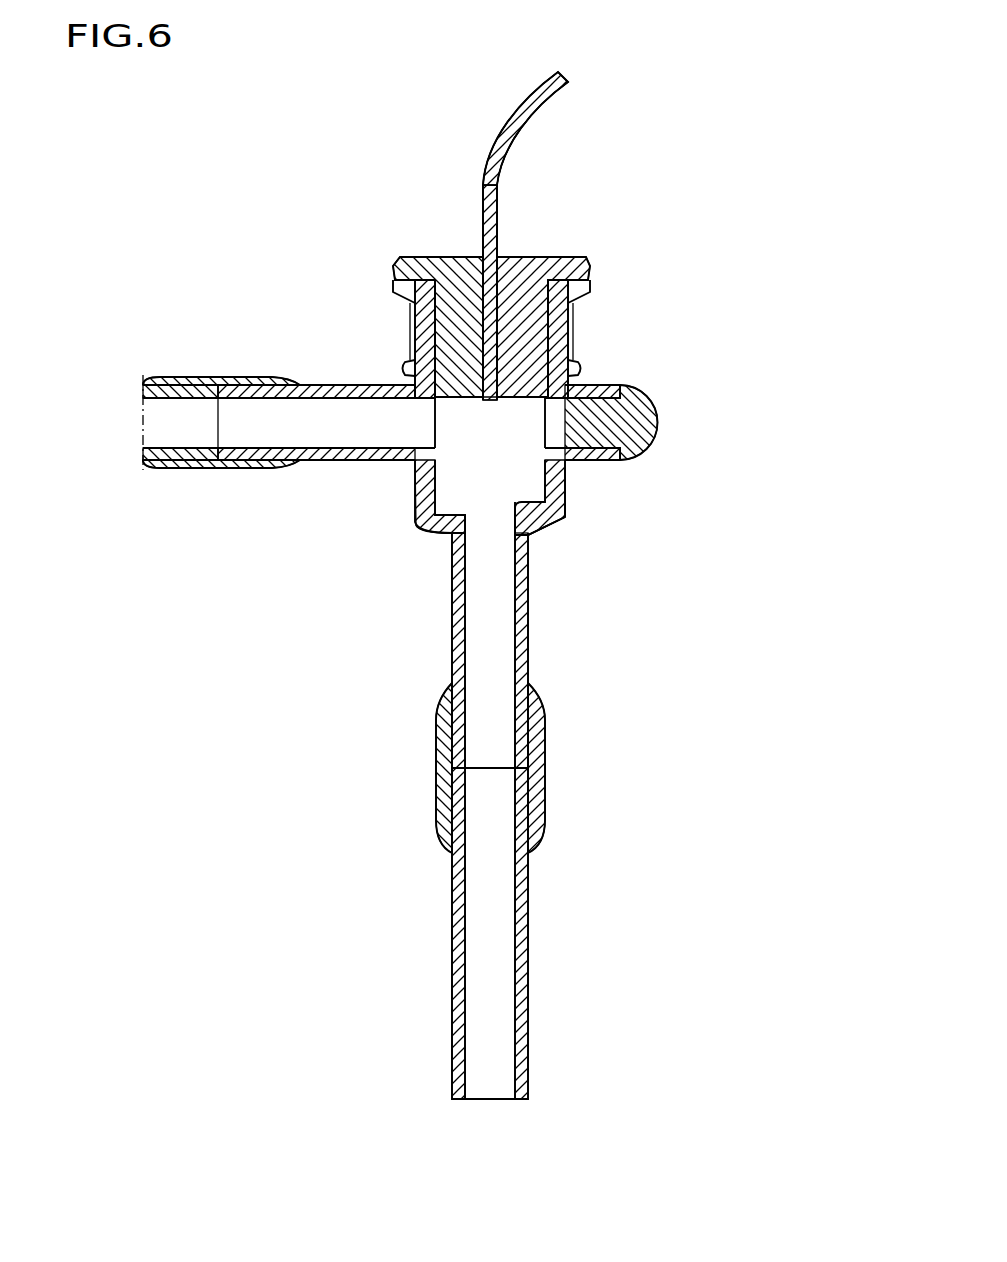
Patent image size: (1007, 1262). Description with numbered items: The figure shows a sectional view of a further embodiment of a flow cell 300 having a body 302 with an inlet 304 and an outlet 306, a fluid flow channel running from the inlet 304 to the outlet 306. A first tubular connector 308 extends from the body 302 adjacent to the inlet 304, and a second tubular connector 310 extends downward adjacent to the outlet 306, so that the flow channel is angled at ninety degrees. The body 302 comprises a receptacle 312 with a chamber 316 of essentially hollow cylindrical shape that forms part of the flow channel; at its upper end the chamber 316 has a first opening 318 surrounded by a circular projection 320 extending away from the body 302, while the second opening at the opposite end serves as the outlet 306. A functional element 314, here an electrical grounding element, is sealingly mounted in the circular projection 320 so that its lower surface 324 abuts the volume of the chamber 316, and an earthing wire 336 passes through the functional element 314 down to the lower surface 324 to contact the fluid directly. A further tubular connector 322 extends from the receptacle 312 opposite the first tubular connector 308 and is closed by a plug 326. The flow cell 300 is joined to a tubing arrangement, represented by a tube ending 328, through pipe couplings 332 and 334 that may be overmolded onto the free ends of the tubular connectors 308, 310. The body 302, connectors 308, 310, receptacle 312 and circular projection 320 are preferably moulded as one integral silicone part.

The flow cell 300 is at (422, 565).
The body 302 is at (499, 573).
The inlet 304 is at (452, 455).
The outlet 306 is at (538, 503).
The first tubular connector 308 is at (327, 380).
The second tubular connector 310 is at (532, 627).
The receptacle 312 is at (565, 483).
The functional element 314 is at (533, 251).
The chamber 316 is at (440, 497).
The first opening 318 is at (545, 413).
The circular projection 320 is at (423, 322).
The further tubular connector 322 is at (603, 457).
The lower surface 324 is at (452, 408).
The plug 326 is at (640, 418).
The tube ending 328 is at (168, 400).
The pipe coupling 332 is at (200, 378).
The pipe coupling 334 is at (545, 793).
The earthing wire 336 is at (522, 101).